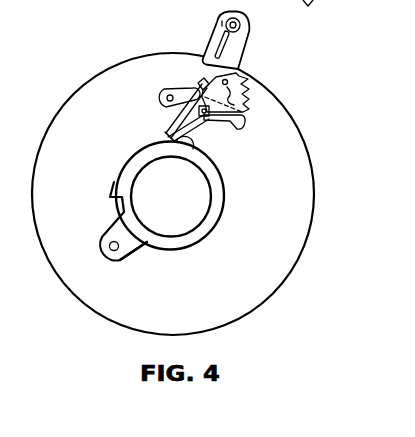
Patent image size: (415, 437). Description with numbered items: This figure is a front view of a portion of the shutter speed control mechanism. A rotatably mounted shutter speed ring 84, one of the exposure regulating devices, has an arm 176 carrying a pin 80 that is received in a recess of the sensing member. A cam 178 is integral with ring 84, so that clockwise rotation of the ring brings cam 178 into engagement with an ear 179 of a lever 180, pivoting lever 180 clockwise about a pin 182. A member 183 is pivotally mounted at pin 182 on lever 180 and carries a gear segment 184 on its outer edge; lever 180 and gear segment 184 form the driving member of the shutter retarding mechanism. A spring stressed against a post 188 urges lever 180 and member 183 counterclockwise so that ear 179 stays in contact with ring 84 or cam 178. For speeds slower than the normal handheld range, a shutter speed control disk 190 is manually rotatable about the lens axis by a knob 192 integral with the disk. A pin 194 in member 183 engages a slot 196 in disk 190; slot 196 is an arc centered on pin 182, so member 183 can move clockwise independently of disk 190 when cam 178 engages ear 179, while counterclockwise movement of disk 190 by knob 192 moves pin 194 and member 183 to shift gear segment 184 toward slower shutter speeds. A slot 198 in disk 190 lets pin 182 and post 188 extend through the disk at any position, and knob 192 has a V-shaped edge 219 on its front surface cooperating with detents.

The pin 80 is at (114, 251).
The shutter speed ring 84 is at (206, 232).
The arm 176 is at (139, 250).
The cam 178 is at (112, 184).
The ear 179 is at (165, 134).
The lever 180 is at (189, 139).
The pin 182 is at (210, 119).
The member 183 is at (238, 59).
The gear segment 184 is at (248, 116).
The post 188 is at (160, 99).
The shutter speed control disk 190 is at (56, 112).
The knob 192 is at (221, 15).
The pin 194 is at (250, 77).
The slot 196 is at (249, 105).
The slot 198 is at (208, 116).
The V-shaped edge 219 is at (244, 52).